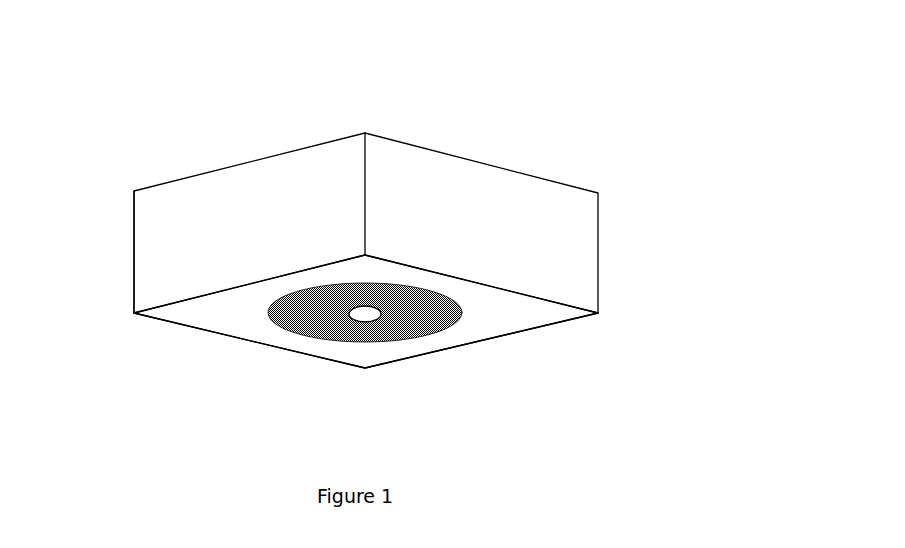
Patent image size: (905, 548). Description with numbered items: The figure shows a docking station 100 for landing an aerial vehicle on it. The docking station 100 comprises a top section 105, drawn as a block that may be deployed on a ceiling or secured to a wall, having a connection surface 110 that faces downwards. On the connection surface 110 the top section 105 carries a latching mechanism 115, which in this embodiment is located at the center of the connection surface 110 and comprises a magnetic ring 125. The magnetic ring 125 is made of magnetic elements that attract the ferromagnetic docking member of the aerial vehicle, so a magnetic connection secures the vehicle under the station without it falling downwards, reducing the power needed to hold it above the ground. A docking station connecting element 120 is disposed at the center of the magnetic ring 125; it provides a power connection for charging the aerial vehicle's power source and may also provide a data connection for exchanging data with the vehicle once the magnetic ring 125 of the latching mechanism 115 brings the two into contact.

The docking station 100 is at (615, 165).
The top section 105 is at (133, 273).
The connection surface 110 is at (232, 310).
The latching mechanism 115 is at (417, 345).
The docking station connecting element 120 is at (360, 320).
The magnetic ring 125 is at (437, 315).